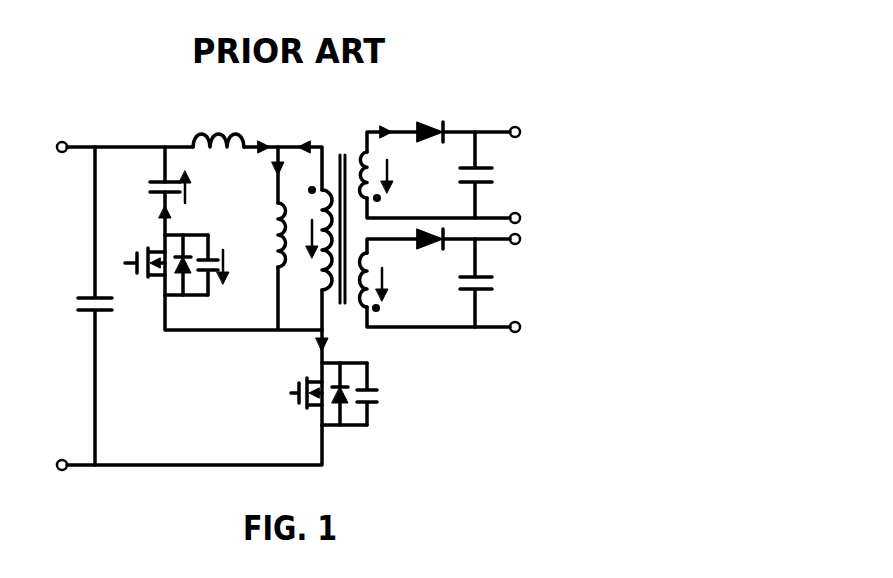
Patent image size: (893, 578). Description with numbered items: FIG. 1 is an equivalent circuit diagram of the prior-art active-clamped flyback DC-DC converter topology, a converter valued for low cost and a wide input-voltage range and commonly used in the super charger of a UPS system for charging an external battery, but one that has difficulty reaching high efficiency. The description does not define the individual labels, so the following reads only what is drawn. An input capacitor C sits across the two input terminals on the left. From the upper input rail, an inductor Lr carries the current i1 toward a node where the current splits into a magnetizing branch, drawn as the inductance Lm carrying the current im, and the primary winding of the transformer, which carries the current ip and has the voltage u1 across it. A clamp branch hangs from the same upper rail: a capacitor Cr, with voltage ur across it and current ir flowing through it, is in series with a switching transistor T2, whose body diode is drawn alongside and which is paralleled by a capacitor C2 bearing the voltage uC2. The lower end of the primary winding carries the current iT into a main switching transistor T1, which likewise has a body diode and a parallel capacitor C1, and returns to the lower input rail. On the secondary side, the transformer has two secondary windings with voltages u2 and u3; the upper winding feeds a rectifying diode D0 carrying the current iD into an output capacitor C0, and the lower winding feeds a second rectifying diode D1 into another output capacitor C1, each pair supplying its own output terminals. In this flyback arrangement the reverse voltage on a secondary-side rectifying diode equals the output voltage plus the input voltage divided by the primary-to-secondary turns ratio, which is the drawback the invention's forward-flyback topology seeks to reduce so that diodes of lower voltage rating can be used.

The input filter capacitor C is at (87, 306).
The resonant capacitor Cr is at (150, 178).
The resonant inductor Lr is at (218, 129).
The magnetizing inductance Lm is at (259, 235).
The auxiliary switch transistor T2 is at (164, 270).
The snubber capacitor of T2 C2 is at (217, 275).
The main switch transistor T1 is at (319, 394).
The capacitor C1 is at (439, 332).
The output rectifier diode D0 is at (434, 117).
The output capacitor C0 is at (491, 175).
The second output rectifier diode D1 is at (430, 258).
The input current i1 is at (259, 134).
The primary current ip is at (299, 134).
The magnetizing current im is at (271, 177).
The resonant current ir is at (155, 214).
The resonant capacitor voltage ur is at (194, 192).
The voltage across C2 uC2 is at (239, 269).
The primary voltage u1 is at (313, 238).
The first secondary voltage u2 is at (398, 176).
The second secondary voltage u3 is at (393, 284).
The diode current iD is at (384, 119).
The main switch current iT is at (312, 354).